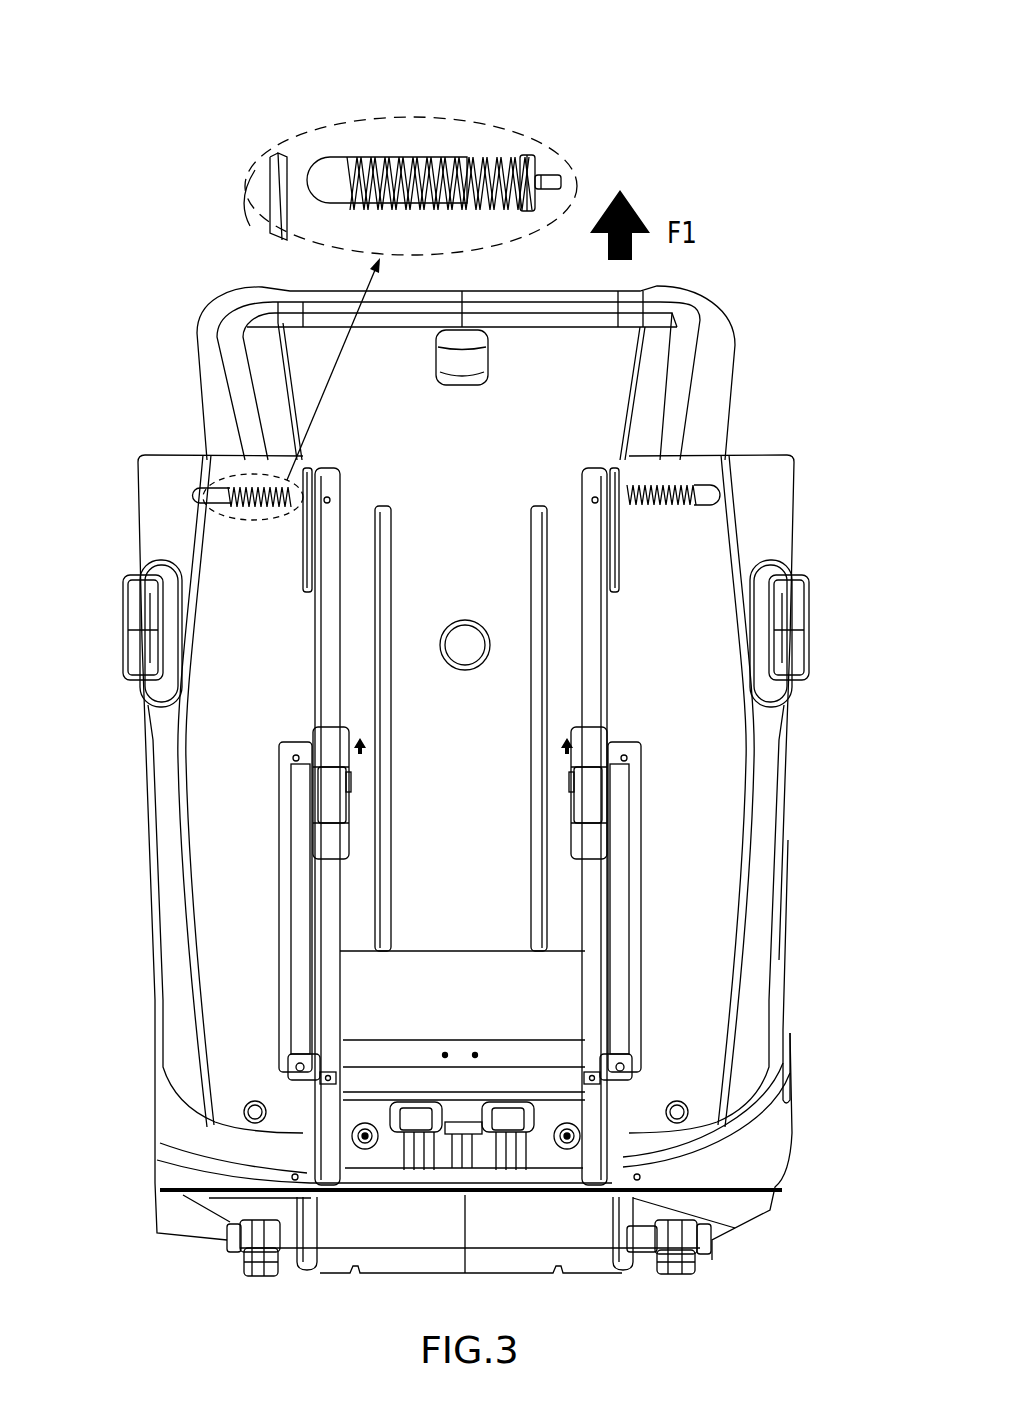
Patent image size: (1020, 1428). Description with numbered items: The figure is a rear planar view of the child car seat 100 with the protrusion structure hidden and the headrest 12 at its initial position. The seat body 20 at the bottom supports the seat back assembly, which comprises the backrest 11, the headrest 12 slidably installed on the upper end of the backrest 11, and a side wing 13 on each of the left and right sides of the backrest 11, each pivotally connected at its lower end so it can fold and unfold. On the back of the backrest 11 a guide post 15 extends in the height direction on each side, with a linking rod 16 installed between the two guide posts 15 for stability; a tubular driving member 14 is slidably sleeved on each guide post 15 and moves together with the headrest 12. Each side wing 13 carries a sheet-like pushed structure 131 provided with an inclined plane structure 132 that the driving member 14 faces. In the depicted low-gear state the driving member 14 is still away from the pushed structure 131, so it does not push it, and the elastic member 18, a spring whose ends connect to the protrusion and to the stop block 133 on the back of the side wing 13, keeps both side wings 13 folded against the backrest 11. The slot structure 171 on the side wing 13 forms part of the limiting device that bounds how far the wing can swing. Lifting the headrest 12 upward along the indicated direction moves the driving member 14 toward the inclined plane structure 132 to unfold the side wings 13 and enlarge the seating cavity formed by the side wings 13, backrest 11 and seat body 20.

The child car seat 100 is at (122, 30).
The backrest 11 is at (495, 885).
The headrest 12 is at (612, 403).
The side wing 13 is at (240, 760).
The pushed structure 131 is at (313, 600).
The inclined plane structure 132 is at (300, 621).
The stop block 133 is at (533, 173).
The driving member 14 is at (330, 838).
The guide post 15 is at (335, 985).
The linking rod 16 is at (455, 1082).
The slot structure 171 is at (316, 168).
The elastic member 18 is at (430, 167).
The seat body 20 is at (750, 1145).